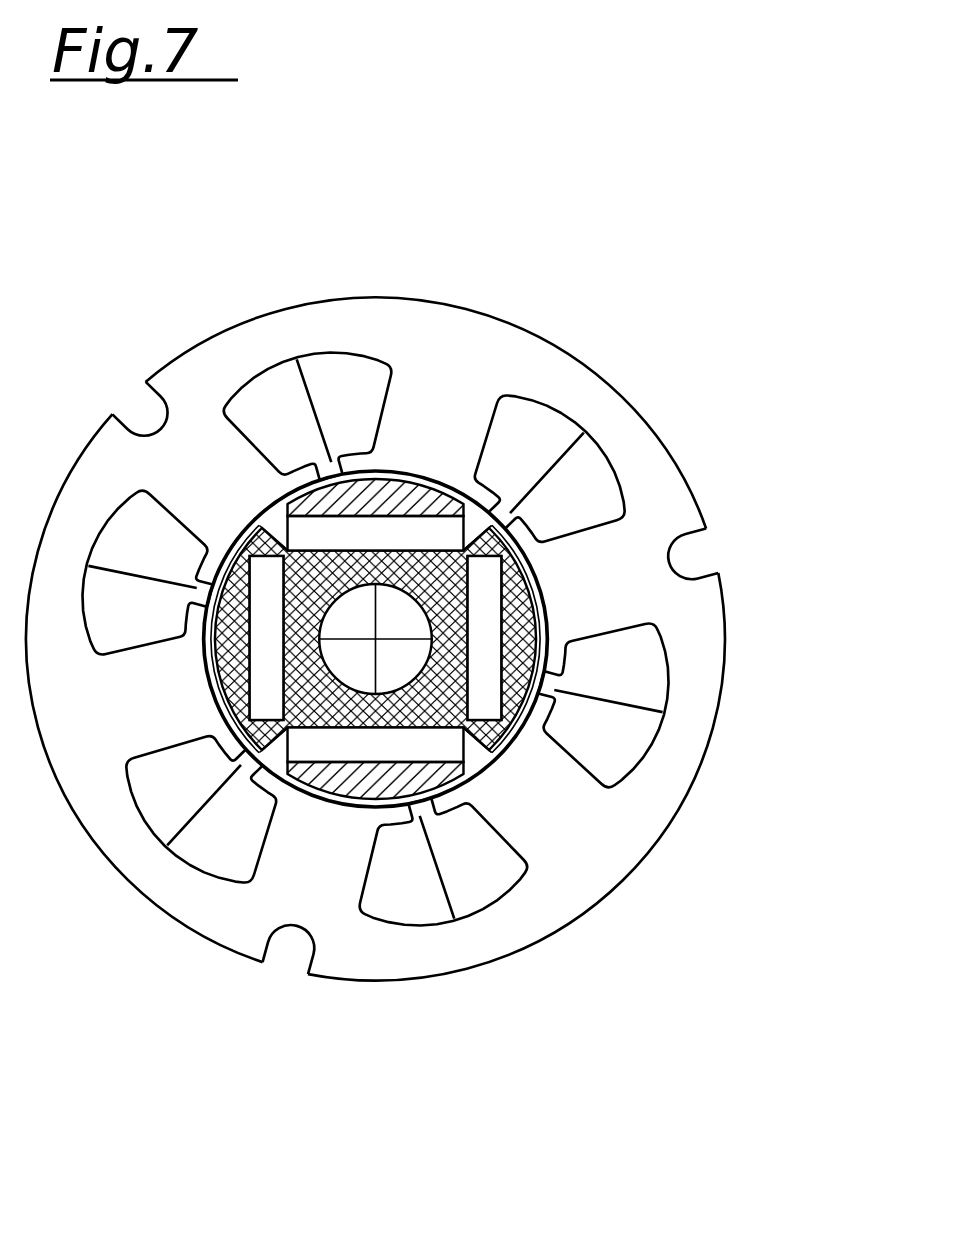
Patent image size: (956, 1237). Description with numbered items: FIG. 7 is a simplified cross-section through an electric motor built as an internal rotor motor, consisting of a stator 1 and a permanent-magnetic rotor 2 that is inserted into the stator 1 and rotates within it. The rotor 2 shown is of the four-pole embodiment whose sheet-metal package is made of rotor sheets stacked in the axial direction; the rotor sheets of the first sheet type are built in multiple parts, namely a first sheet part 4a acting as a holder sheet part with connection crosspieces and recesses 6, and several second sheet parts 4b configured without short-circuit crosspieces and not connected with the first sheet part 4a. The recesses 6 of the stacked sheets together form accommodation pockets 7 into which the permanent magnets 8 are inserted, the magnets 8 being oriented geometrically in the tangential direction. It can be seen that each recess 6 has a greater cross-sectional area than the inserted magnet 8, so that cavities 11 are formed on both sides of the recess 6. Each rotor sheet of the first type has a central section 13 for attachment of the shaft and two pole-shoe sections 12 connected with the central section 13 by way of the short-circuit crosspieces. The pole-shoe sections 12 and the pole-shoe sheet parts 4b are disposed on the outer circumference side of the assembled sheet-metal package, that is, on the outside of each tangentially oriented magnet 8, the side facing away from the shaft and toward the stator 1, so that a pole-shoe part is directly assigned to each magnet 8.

The stator 1 is at (531, 328).
The rotor 2 is at (541, 567).
The first sheet part 4a is at (539, 688).
The second sheet part 4b is at (357, 802).
The recess 6 is at (507, 757).
The accommodation pocket 7 is at (557, 845).
The permanent magnet 8 is at (429, 749).
The cavity 11 is at (488, 527).
The pole-shoe section 12 is at (206, 590).
The central section 13 is at (391, 558).